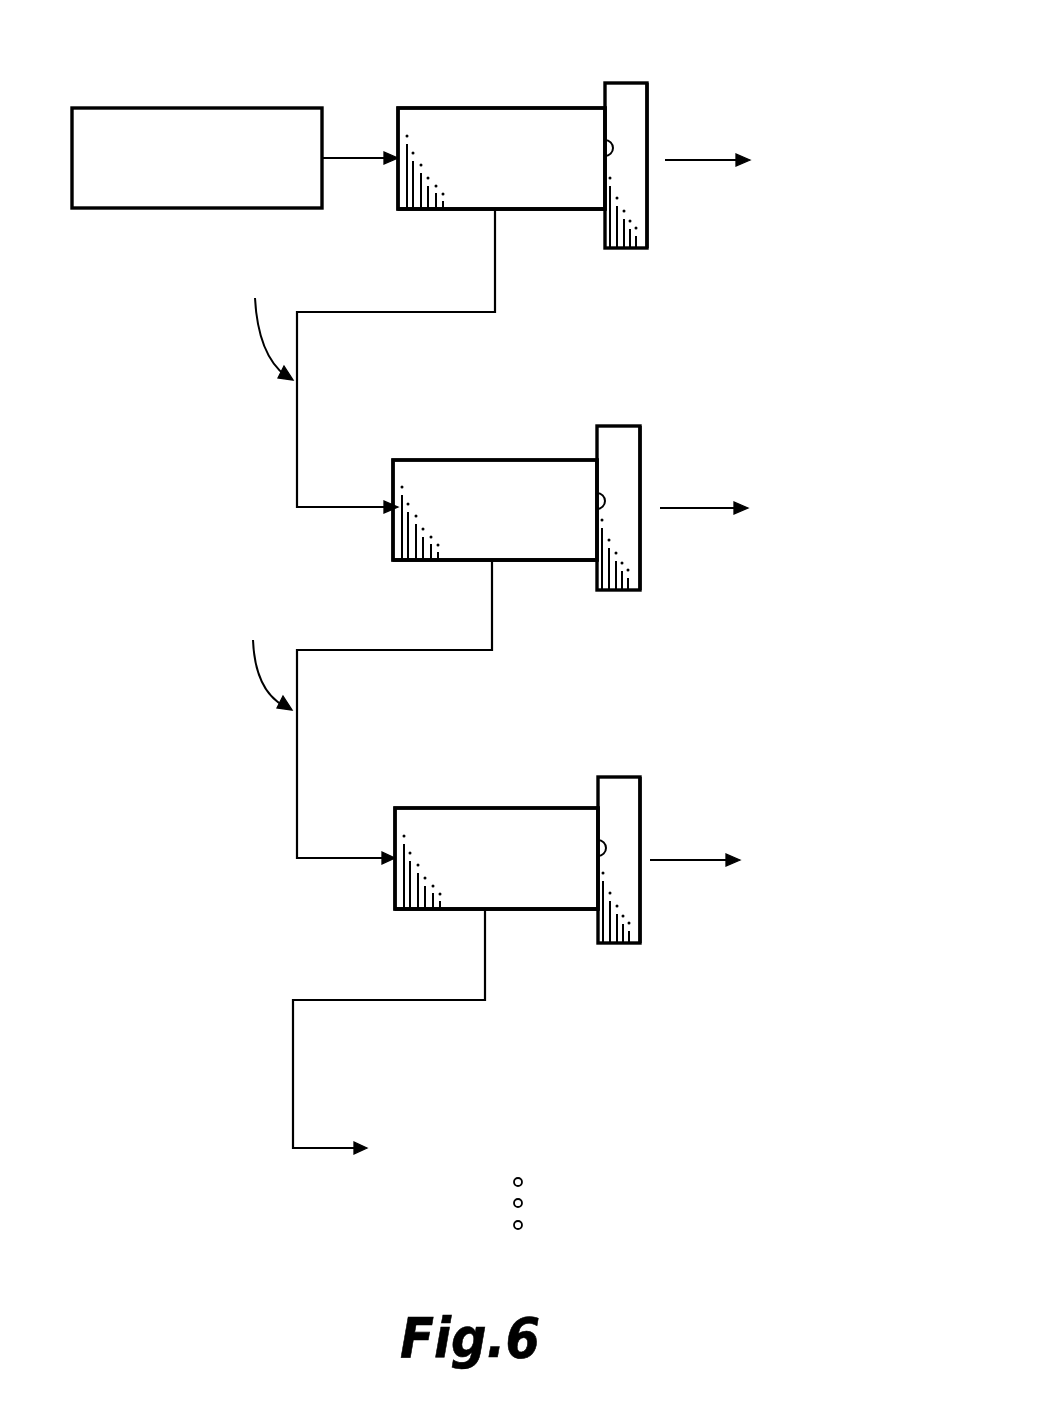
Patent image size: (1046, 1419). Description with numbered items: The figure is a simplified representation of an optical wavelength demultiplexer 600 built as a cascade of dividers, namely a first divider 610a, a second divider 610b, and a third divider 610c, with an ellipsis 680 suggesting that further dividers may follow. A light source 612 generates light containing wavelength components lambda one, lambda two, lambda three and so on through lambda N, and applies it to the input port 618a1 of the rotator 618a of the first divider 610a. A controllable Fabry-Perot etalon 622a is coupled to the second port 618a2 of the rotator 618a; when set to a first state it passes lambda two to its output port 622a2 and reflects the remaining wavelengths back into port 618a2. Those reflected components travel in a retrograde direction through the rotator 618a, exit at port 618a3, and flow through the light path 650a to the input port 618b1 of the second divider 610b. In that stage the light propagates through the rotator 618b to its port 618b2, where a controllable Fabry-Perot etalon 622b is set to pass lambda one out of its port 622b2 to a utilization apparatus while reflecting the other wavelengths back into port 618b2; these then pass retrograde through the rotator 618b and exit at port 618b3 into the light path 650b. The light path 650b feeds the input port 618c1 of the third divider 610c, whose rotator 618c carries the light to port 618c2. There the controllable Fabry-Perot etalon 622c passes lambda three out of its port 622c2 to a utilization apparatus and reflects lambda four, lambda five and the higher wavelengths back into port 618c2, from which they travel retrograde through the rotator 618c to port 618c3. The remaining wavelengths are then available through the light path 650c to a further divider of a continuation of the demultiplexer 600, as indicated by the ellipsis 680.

The demultiplexer 600 is at (488, 617).
The light source 612 is at (200, 108).
The first divider 610a is at (533, 42).
The rotator 618a is at (499, 108).
The input port 618a1 is at (398, 128).
The second port 618a2 is at (605, 140).
The port 618a3 is at (522, 211).
The controllable Fabry-Perot etalon 622a is at (634, 82).
The output port 622a2 is at (647, 128).
The light path 650a is at (496, 297).
The second divider 610b is at (536, 392).
The rotator 618b is at (501, 459).
The input port 618b1 is at (393, 482).
The port 618b2 is at (597, 492).
The port 618b3 is at (520, 562).
The controllable Fabry-Perot etalon 622b is at (622, 426).
The port 622b2 is at (640, 483).
The light path 650b is at (493, 640).
The third divider 610c is at (537, 742).
The rotator 618c is at (501, 808).
The input port 618c1 is at (395, 830).
The port 618c2 is at (598, 840).
The port 618c3 is at (518, 911).
The controllable Fabry-Perot etalon 622c is at (622, 775).
The port 622c2 is at (640, 828).
The light path 650c is at (486, 993).
The ellipsis 680 is at (524, 1203).